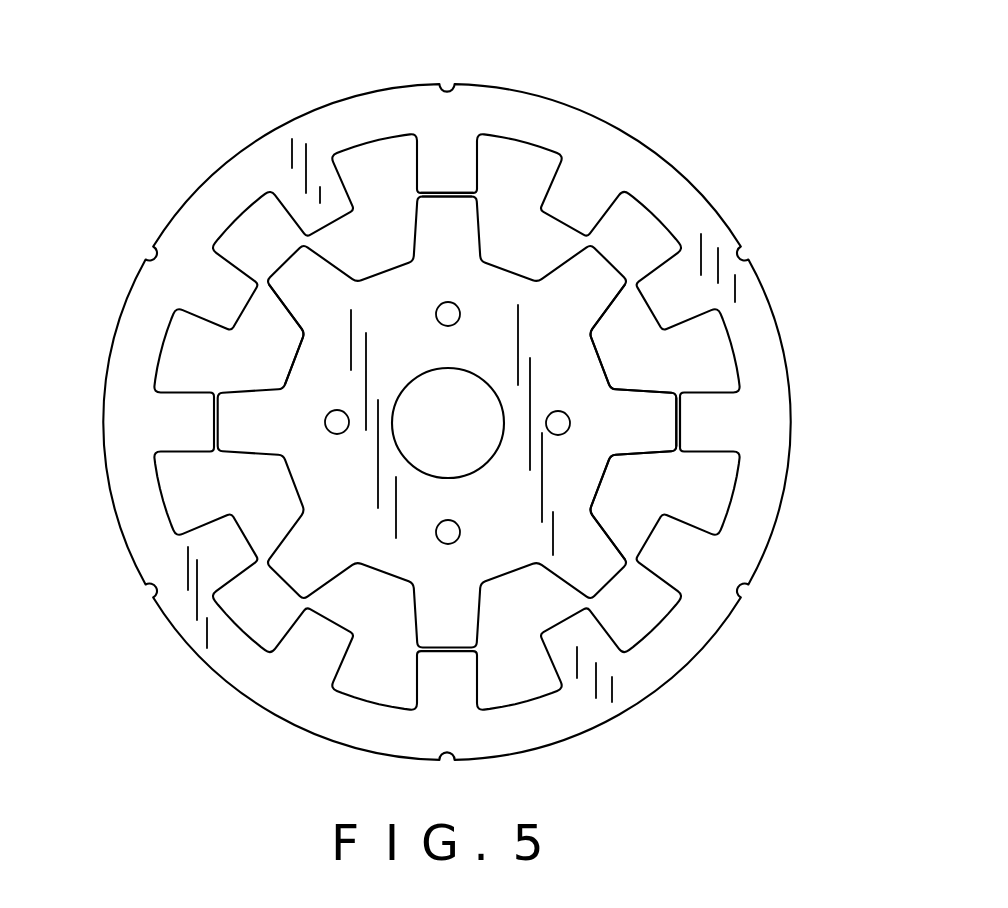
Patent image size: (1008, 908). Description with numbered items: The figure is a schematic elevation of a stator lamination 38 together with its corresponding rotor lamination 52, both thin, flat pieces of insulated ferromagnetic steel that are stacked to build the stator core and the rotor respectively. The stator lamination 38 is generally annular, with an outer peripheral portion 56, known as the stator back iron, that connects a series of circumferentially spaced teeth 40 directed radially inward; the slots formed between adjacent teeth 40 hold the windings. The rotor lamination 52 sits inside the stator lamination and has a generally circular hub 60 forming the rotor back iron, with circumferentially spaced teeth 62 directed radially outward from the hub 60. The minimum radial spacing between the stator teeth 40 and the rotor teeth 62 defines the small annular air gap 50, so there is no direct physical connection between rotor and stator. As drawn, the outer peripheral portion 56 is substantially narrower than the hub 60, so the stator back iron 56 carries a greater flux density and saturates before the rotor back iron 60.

The stator lamination 38 is at (667, 148).
The stator teeth 40 is at (418, 177).
The air gap 50 is at (452, 192).
The rotor lamination 52 is at (740, 252).
The outer peripheral portion 56 is at (303, 138).
The hub 60 is at (297, 358).
The rotor teeth 62 is at (610, 258).